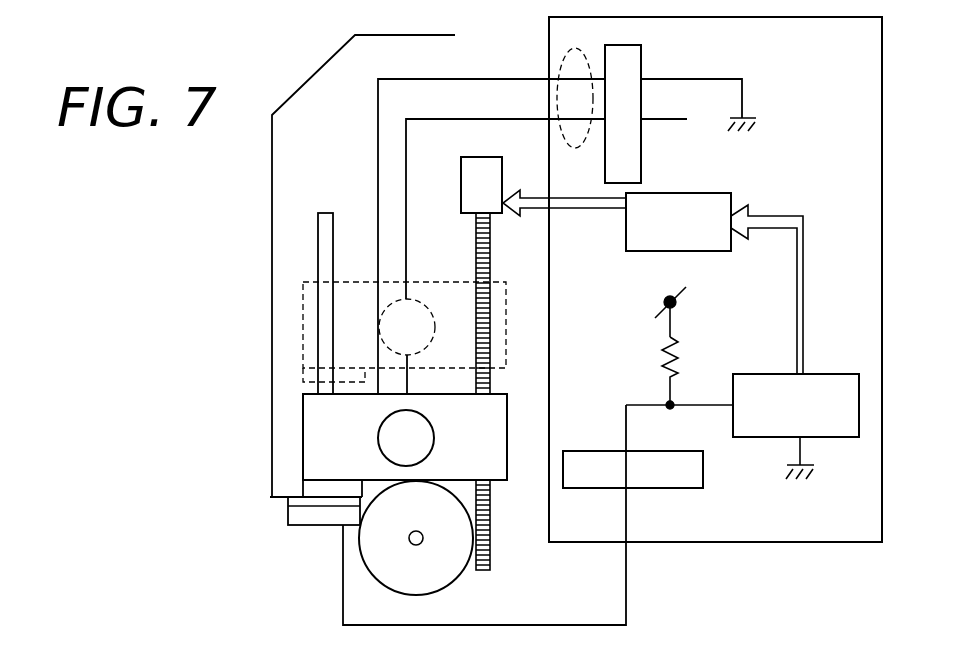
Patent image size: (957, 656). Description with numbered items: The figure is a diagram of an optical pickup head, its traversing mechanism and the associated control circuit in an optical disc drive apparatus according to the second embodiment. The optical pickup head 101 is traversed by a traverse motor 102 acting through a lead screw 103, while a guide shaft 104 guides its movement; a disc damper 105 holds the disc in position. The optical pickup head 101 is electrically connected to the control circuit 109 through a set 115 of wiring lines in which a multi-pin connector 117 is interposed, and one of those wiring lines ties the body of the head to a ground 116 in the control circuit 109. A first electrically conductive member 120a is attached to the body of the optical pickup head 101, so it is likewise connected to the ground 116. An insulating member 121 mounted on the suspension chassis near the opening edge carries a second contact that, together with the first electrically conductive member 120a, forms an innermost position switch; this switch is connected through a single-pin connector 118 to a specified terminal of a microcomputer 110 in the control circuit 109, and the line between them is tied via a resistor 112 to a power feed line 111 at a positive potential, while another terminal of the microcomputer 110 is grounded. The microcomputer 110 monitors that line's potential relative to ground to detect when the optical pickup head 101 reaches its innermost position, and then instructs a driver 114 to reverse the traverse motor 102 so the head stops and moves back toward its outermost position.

The optical pickup head 101 is at (303, 418).
The traverse motor 102 is at (461, 181).
The lead screw 103 is at (476, 237).
The guide shaft 104 is at (333, 213).
The disc damper 105 is at (446, 588).
The control circuit 109 is at (549, 50).
The microcomputer 110 is at (843, 374).
The power feed line 111 is at (664, 301).
The resistor 112 is at (662, 350).
The driver 114 is at (697, 251).
The set of wiring lines 115 is at (557, 108).
The ground 116 is at (748, 118).
The multi-pin connector 117 is at (641, 68).
The 1-pin connector 118 is at (595, 451).
The first electrically conductive member 120a is at (303, 487).
The insulating member 121 is at (288, 513).